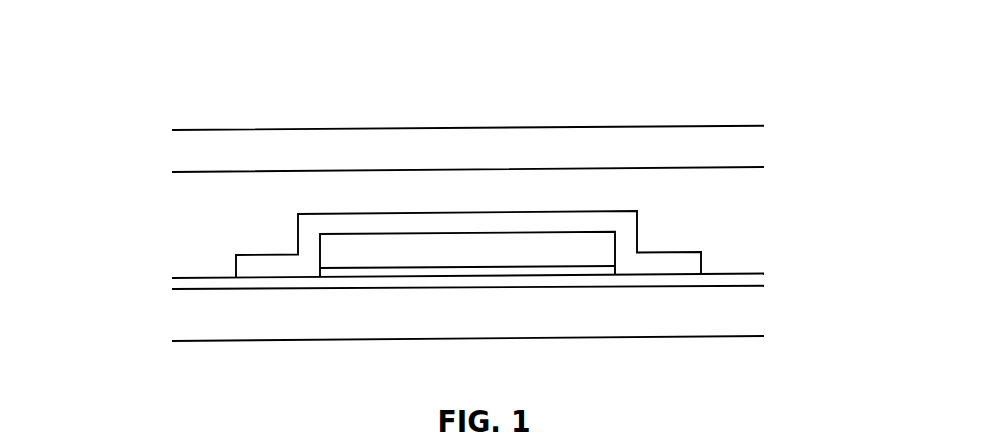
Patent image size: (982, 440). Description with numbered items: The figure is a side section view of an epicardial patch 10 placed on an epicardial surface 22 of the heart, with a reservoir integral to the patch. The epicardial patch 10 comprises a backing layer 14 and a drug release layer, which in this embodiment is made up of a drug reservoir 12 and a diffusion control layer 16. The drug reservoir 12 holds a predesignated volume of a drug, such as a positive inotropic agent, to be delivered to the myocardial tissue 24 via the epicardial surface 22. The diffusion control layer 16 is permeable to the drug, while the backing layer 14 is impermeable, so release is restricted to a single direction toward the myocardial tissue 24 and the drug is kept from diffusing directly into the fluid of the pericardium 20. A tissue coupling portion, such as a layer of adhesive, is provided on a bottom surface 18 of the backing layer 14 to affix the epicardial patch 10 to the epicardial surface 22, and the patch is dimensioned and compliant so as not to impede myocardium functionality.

The epicardial patch 10 is at (454, 235).
The drug reservoir 12 is at (445, 247).
The backing layer 14 is at (637, 210).
The diffusion control layer 16 is at (509, 266).
The bottom surface 18 is at (657, 273).
The pericardium 20 is at (595, 125).
The epicardial surface 22 is at (227, 278).
The myocardial tissue 24 is at (271, 323).